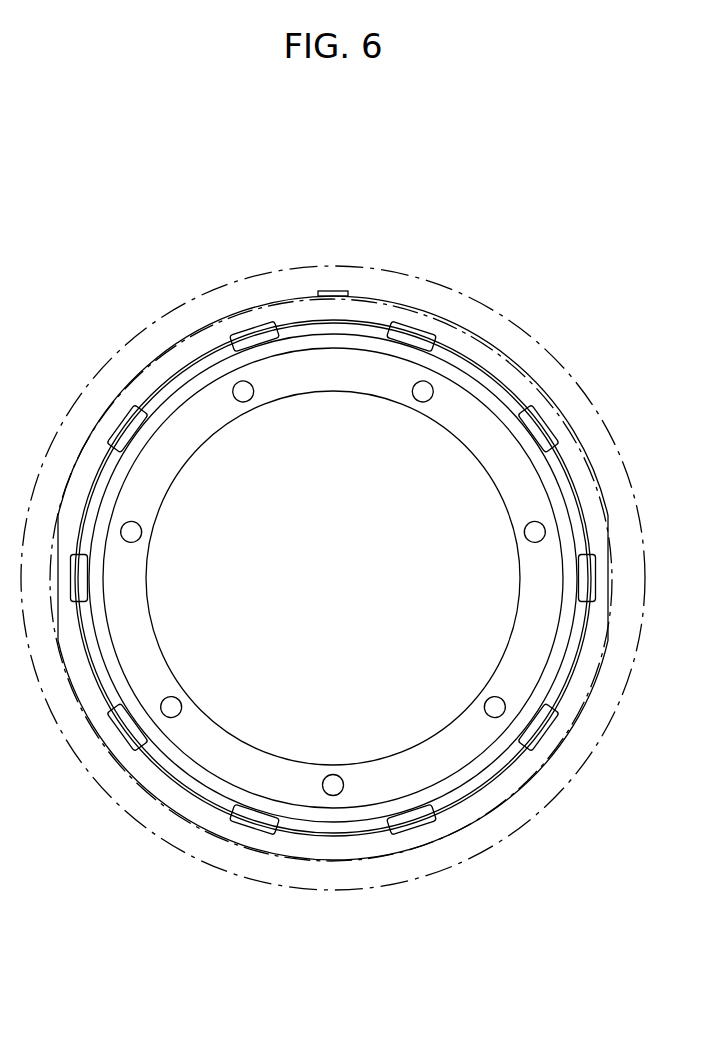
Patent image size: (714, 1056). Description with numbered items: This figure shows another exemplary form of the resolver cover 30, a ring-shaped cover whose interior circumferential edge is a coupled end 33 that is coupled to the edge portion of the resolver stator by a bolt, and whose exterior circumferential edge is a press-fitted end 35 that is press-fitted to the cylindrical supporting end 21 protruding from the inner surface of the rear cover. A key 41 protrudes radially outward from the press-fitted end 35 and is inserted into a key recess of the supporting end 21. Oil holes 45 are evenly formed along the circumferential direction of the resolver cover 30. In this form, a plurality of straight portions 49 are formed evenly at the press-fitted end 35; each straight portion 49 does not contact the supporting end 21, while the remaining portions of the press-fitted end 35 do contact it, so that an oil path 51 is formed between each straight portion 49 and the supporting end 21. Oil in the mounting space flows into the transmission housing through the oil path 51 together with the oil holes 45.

The supporting end 21 is at (333, 549).
The resolver cover 30 is at (336, 578).
The coupled end 33 is at (333, 626).
The press-fitted end 35 is at (346, 600).
The key 41 is at (334, 257).
The oil holes 45 is at (324, 577).
The straight portion 49 is at (333, 551).
The oil path 51 is at (331, 558).